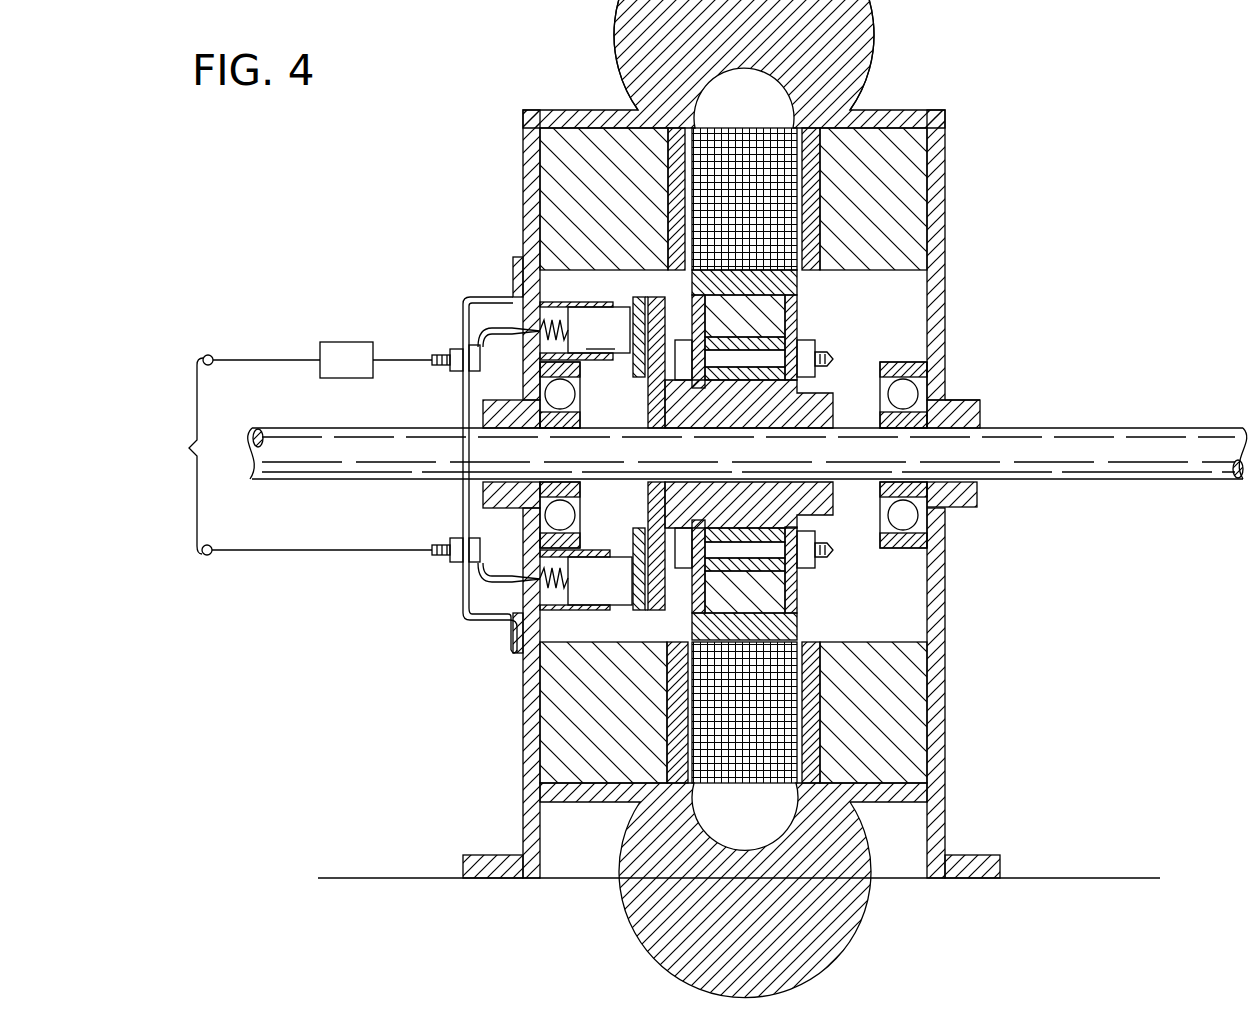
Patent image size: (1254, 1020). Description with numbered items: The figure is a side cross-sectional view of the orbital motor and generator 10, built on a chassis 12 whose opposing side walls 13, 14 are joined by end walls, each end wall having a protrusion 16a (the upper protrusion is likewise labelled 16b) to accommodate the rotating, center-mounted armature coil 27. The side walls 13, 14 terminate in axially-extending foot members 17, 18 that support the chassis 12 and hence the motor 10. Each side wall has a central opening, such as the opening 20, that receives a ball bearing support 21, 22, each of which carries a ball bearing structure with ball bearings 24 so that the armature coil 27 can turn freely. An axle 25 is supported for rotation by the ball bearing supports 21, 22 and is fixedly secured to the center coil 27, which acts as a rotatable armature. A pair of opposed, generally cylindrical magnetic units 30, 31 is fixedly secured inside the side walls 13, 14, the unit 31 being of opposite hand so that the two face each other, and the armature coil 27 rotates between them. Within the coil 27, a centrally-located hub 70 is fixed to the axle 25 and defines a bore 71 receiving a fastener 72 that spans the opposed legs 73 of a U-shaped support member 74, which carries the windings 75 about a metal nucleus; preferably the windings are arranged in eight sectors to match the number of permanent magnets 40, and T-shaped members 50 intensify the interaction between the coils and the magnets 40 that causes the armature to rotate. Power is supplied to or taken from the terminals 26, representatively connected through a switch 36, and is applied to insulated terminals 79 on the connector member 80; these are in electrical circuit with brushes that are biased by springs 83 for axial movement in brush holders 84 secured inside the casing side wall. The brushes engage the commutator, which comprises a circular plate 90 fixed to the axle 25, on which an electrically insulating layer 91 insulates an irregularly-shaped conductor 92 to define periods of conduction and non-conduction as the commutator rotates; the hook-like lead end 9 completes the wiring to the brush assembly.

The hook end of lead 9 is at (514, 650).
The orbital motor and generator 10 is at (1036, 262).
The chassis 12 is at (520, 96).
The side wall 13 is at (527, 218).
The side wall 14 is at (945, 128).
The protrusion 16a is at (812, 828).
The upper arch of housing 16b is at (784, 60).
The foot member 17 is at (475, 855).
The foot member 18 is at (982, 855).
The central opening 20 is at (942, 402).
The ball bearing support 21 is at (487, 497).
The ball bearing support 22 is at (980, 412).
The ball bearings 24 is at (882, 388).
The axle 25 is at (372, 469).
The terminals 26 is at (211, 355).
The armature coil 27 is at (765, 193).
The magnetic unit 30 is at (920, 213).
The magnetic unit 31 is at (537, 163).
The switch 36 is at (350, 342).
The magnets 40 is at (898, 723).
The T-shaped members 50 is at (676, 128).
The hub 70 is at (807, 424).
The bore 71 is at (738, 542).
The fastener 72 is at (836, 553).
The legs 73 is at (797, 588).
The U-shaped support member 74 is at (790, 628).
The windings 75 is at (765, 683).
The insulated terminals 79 is at (448, 372).
The connector member 80 is at (483, 490).
The springs 83 is at (545, 325).
The brush holders 84 is at (583, 588).
The circular plate 90 is at (655, 613).
The electrically insulating layer 91 is at (654, 297).
The irregularly-shaped conductor 92 is at (639, 297).